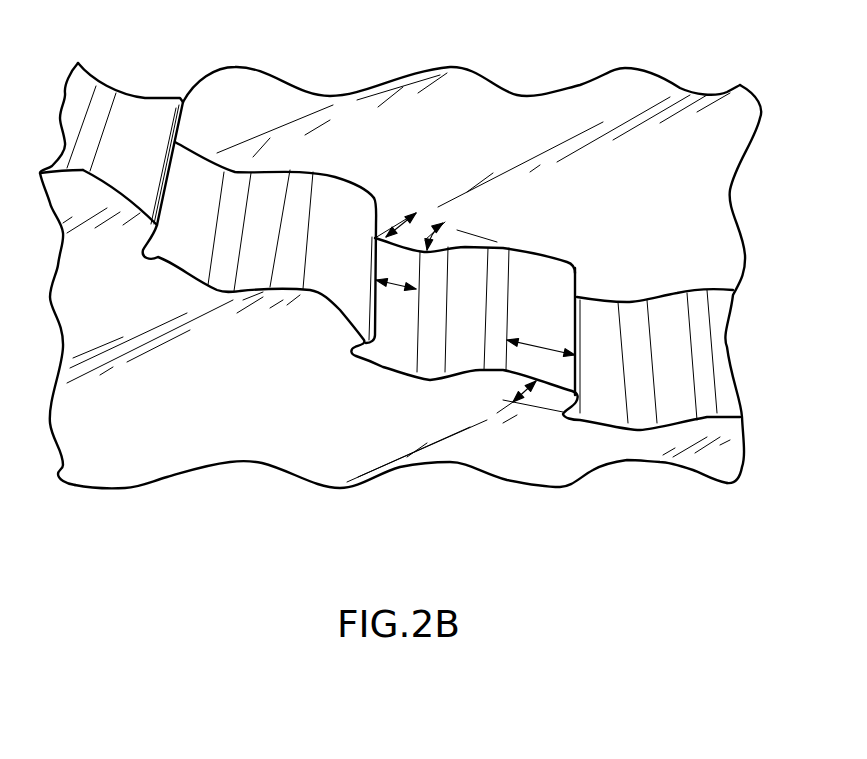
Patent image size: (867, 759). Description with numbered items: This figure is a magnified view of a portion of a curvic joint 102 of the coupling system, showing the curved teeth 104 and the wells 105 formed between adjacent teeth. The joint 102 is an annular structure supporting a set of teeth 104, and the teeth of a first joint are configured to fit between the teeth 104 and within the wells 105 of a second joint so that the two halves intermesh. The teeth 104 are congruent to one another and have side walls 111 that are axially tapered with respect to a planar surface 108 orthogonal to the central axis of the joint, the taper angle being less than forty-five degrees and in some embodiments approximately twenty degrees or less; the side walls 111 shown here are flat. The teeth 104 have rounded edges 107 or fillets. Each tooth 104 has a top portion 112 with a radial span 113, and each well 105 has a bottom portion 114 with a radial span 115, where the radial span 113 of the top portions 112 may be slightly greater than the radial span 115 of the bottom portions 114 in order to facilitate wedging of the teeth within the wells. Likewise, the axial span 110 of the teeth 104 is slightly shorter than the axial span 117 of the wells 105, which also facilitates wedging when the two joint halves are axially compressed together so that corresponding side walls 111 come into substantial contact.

The joint 102 is at (547, 112).
The teeth 104 is at (183, 248).
The wells 105 is at (325, 202).
The edges 107 is at (244, 187).
The planar surface 108 is at (459, 224).
The axial span 110 is at (387, 236).
The side walls 111 is at (467, 272).
The top portions 112 is at (204, 216).
The radial span 113 is at (393, 287).
The bottom portions 114 is at (354, 265).
The radial span 115 is at (533, 344).
The axial span 117 is at (522, 389).